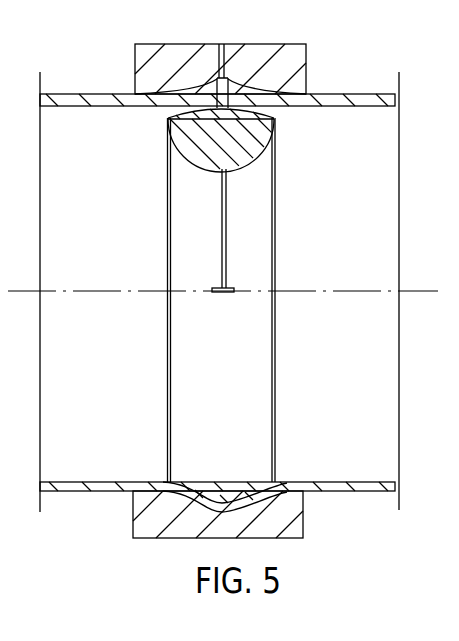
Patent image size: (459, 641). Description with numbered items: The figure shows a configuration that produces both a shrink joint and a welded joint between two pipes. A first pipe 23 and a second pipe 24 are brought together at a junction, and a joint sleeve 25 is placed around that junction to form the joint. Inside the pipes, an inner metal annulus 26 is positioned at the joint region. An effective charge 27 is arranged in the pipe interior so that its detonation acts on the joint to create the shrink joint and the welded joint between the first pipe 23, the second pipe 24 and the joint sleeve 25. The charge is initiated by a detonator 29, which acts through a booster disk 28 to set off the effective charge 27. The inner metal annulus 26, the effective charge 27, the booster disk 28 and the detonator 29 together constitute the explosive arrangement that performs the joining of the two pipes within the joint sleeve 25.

The first pipe 23 is at (354, 96).
The second pipe 24 is at (101, 98).
The joint sleeve 25 is at (285, 58).
The inner metal annulus 26 is at (274, 121).
The effective charge 27 is at (243, 148).
The booster disk 28 is at (227, 223).
The detonator 29 is at (212, 287).